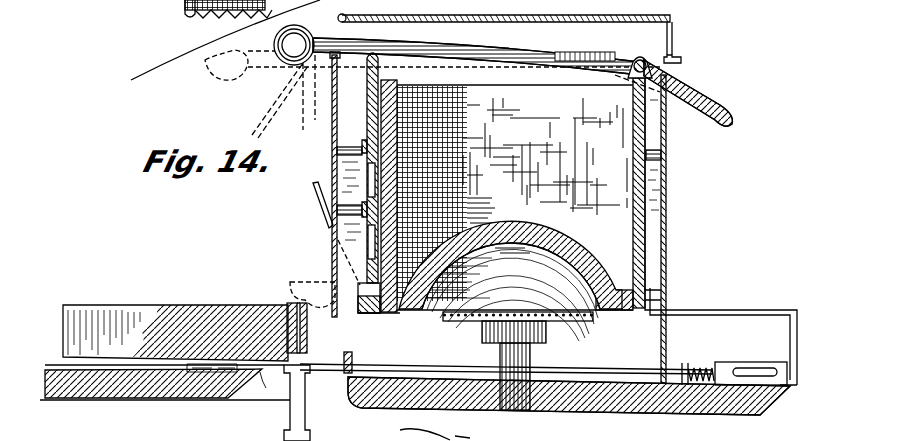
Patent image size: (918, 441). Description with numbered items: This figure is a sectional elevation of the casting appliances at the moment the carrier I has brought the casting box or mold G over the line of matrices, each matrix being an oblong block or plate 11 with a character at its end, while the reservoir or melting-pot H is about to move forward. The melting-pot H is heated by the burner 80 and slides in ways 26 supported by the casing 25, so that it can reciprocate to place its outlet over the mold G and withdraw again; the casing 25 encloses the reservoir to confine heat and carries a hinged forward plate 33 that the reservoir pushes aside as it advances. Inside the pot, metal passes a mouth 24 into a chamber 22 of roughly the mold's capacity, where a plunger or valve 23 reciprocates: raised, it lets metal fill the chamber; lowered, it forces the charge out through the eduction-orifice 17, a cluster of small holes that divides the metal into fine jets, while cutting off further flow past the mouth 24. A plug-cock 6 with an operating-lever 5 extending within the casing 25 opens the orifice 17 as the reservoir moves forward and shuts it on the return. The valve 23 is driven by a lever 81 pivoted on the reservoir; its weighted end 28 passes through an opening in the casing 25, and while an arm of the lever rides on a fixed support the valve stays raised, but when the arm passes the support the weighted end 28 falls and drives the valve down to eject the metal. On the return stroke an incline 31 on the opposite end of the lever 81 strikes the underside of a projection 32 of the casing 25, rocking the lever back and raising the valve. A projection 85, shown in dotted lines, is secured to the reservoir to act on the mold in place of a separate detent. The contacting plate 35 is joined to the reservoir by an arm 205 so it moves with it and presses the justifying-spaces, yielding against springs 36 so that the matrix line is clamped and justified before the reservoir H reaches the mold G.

The weighted end 28 is at (294, 45).
The hinged forward plate 33 is at (250, 133).
The casing 25 is at (676, 143).
The ways 26 is at (656, 197).
The chamber 22 is at (367, 286).
The plunger or valve 23 is at (367, 243).
The reservoir or melting-pot H is at (512, 193).
The mouth 24 is at (510, 281).
The plug-cock 6 is at (358, 312).
The eduction-orifice 17 is at (382, 320).
The projection 85 is at (312, 285).
The operating-lever 5 is at (316, 200).
The lever 81 is at (600, 62).
The incline 31 is at (710, 86).
The projection 32 is at (680, 55).
The burner 80 is at (555, 325).
The arm 205 is at (724, 310).
The contacting plate 35 is at (506, 354).
The springs 36 is at (712, 368).
The carrier I is at (175, 324).
The casting box or mold G is at (290, 321).
The oblong block or plate 11 is at (301, 376).